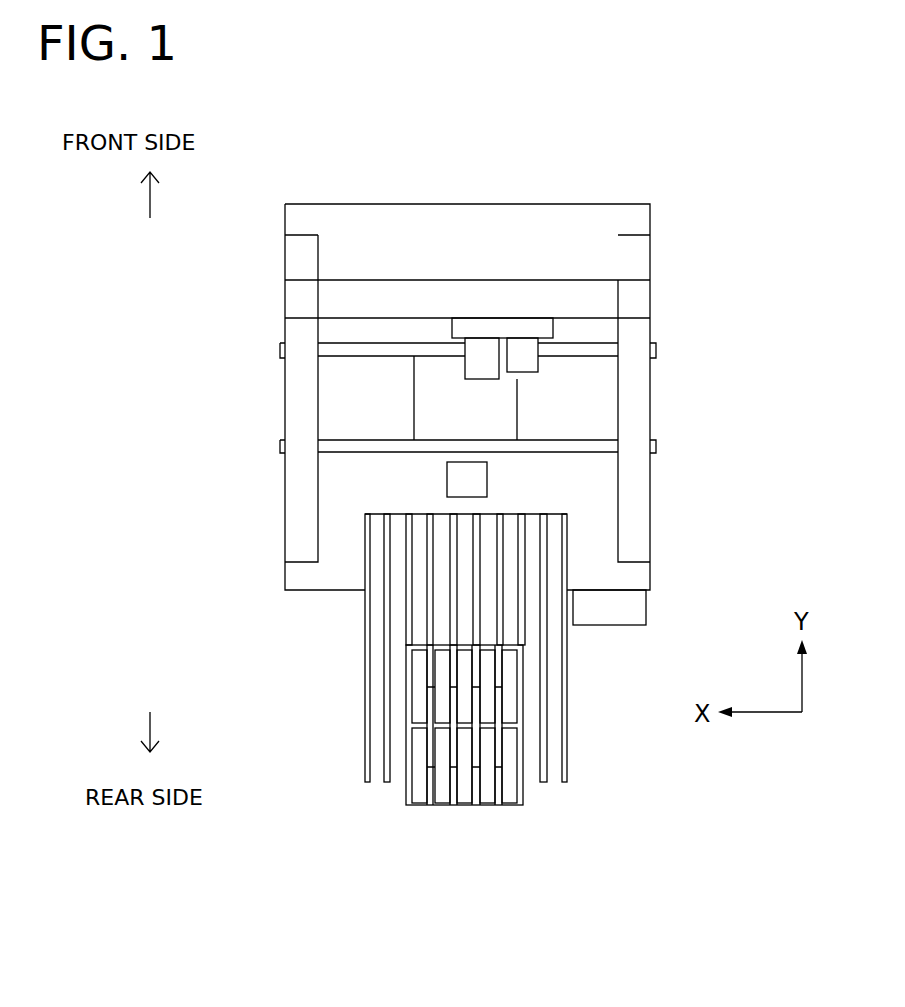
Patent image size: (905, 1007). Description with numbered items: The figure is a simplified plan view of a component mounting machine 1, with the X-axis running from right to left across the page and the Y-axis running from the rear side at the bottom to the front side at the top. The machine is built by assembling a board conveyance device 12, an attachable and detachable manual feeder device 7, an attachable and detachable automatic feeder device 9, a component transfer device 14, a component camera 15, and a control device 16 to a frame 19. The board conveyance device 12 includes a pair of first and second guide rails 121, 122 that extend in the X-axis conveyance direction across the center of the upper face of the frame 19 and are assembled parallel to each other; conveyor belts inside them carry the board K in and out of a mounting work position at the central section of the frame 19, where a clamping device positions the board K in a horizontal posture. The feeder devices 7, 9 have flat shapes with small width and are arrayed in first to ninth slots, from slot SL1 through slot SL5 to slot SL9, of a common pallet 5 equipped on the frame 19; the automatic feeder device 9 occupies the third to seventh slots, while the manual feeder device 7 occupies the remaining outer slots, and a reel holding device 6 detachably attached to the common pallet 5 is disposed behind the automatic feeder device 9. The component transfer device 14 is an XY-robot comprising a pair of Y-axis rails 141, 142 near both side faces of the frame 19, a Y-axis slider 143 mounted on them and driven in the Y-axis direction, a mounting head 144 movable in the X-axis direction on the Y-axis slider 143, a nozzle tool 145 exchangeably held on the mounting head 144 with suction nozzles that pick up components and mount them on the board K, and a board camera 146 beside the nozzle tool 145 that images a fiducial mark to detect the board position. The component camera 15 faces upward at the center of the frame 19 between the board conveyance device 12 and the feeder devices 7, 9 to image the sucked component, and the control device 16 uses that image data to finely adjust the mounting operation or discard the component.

The component mounting machine 1 is at (628, 168).
The frame 19 is at (338, 215).
The component transfer device 14 is at (463, 258).
The Y-axis slider 143 is at (296, 300).
The mounting head 144 is at (500, 325).
The nozzle tool 145 is at (487, 356).
The board camera 146 is at (528, 360).
The first guide rail 121 is at (337, 352).
The second guide rail 122 is at (335, 446).
The board K is at (433, 397).
The Y-axis rail 141 is at (297, 483).
The Y-axis rail 142 is at (638, 514).
The board conveyance device 12 is at (606, 409).
The component camera 15 is at (478, 478).
The manual feeder device 7 is at (373, 566).
The common pallet 5 is at (344, 612).
The automatic feeder device 9 is at (420, 610).
The control device 16 is at (603, 618).
The reel holding device 6 is at (420, 805).
The first slot SL1 is at (375, 828).
The fifth slot SL5 is at (465, 828).
The ninth slot SL9 is at (555, 828).